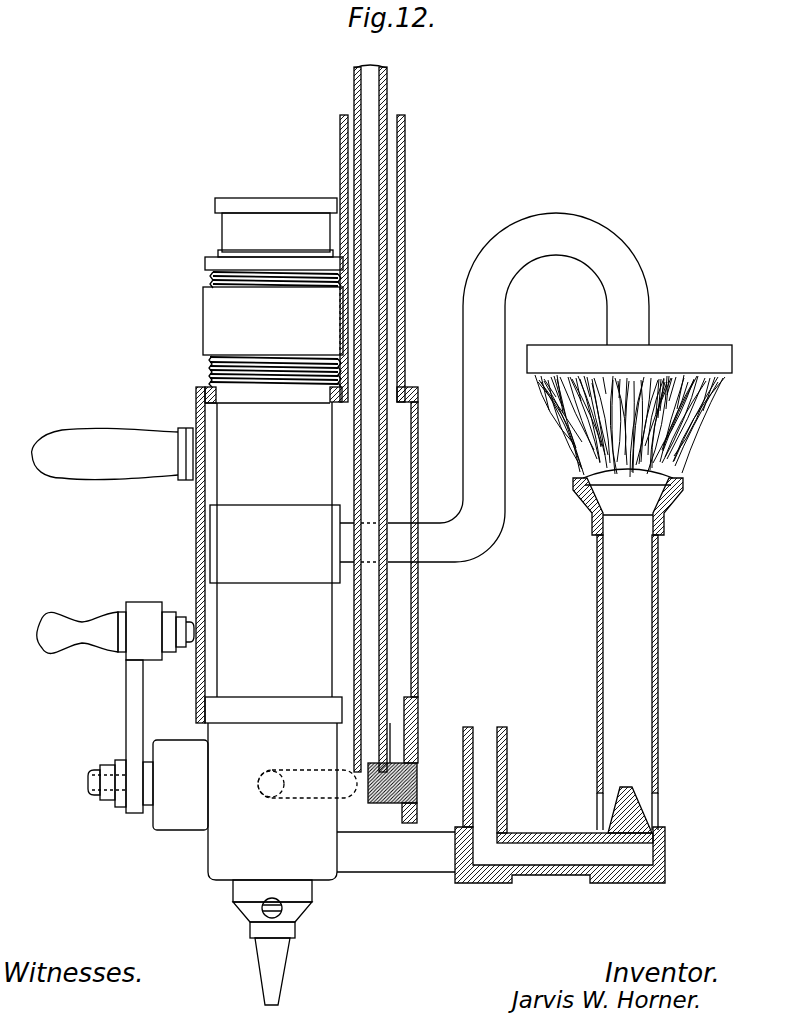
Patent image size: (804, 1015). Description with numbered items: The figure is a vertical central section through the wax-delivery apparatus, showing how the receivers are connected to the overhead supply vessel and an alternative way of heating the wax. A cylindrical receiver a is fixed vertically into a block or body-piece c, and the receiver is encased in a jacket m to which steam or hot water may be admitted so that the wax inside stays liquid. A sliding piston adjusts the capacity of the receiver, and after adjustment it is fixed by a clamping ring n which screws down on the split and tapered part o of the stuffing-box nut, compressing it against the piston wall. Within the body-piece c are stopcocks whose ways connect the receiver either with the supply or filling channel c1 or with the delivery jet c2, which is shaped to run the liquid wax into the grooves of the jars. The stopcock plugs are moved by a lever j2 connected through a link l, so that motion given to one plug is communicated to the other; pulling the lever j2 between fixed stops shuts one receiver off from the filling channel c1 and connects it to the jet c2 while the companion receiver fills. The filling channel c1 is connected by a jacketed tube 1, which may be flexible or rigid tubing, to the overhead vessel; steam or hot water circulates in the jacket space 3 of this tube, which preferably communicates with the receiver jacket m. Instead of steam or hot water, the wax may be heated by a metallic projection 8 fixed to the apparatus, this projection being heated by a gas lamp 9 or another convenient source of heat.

The jacketed tube 1 is at (380, 76).
The jacket space 3 is at (349, 180).
The metallic projection 8 is at (471, 398).
The gas lamp 9 is at (628, 651).
The clamping ring n is at (208, 262).
The split and tapered part of stuffing-box nut o is at (213, 276).
The cylindrical receiver a is at (269, 555).
The jacket m is at (393, 605).
The link l is at (153, 614).
The lever j2 is at (136, 714).
The block or body-piece c is at (331, 801).
The supply or filling channel c1 is at (307, 784).
The delivery jet c2 is at (272, 942).